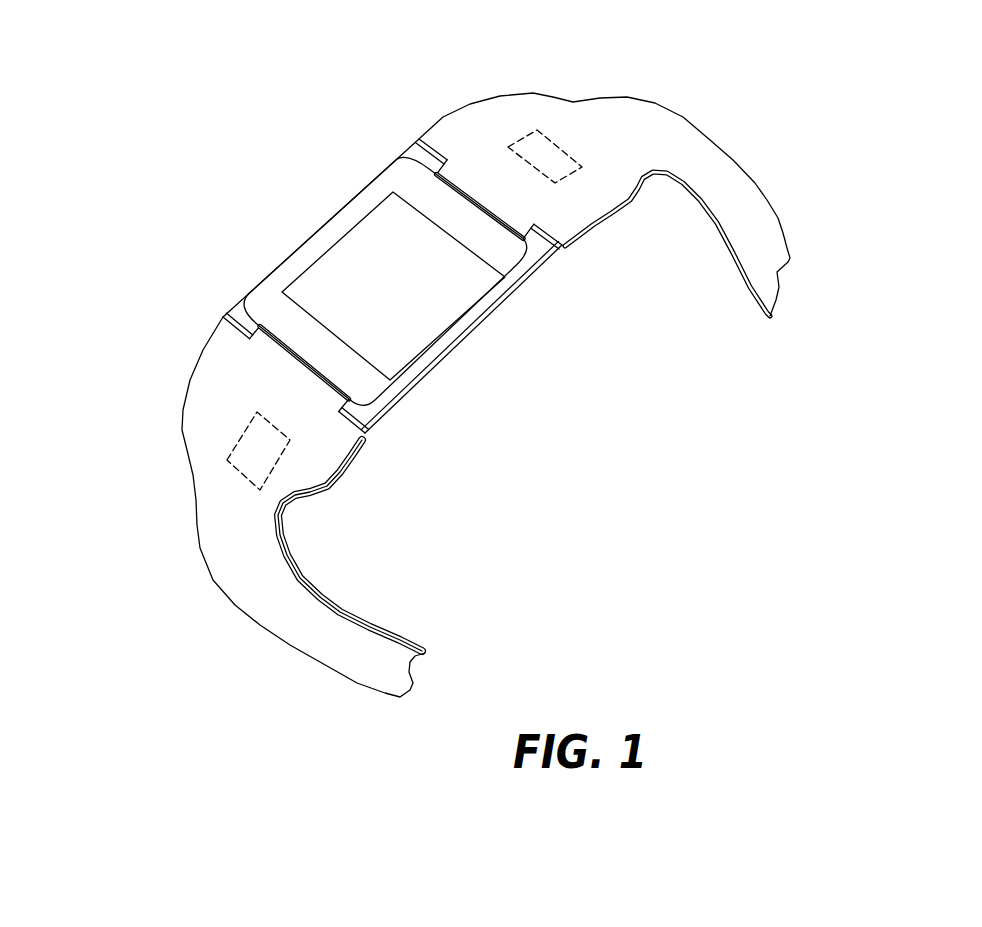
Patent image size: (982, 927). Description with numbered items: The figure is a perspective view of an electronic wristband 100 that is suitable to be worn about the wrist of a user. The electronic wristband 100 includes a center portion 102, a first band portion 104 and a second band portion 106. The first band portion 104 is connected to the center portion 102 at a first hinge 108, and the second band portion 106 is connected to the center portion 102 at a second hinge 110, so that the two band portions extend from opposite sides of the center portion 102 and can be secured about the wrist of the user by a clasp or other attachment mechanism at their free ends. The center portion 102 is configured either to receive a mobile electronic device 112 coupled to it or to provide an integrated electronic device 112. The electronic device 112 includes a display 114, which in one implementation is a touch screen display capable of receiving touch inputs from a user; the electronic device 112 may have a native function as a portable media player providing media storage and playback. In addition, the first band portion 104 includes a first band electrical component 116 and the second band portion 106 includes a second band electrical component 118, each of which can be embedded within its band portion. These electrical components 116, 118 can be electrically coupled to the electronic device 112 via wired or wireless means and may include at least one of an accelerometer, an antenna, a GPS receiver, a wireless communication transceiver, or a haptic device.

The electronic wristband 100 is at (182, 199).
The center portion 102 is at (473, 338).
The first band portion 104 is at (610, 120).
The second band portion 106 is at (245, 565).
The first hinge 108 is at (565, 250).
The second hinge 110 is at (365, 438).
The electronic device 112 is at (325, 237).
The display 114 is at (412, 299).
The first band electrical component 116 is at (523, 152).
The second band electrical component 118 is at (245, 447).